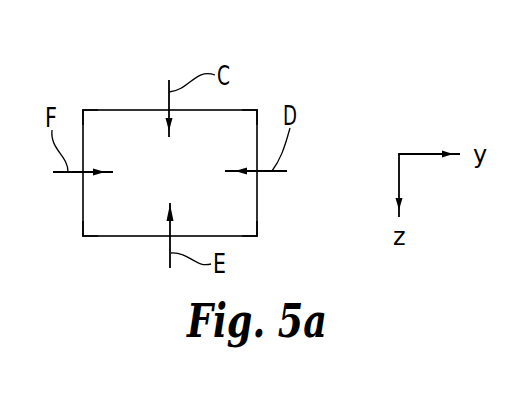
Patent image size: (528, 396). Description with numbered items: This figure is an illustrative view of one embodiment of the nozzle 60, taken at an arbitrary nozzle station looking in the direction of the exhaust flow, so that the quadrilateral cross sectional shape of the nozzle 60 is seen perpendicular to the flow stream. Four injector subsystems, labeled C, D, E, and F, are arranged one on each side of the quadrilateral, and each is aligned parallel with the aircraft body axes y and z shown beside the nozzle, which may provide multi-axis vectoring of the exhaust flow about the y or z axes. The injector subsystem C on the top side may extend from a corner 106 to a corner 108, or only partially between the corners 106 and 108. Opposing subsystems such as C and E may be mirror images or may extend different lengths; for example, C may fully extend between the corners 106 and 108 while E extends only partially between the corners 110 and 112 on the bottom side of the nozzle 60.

The nozzle 60 is at (118, 110).
The corner 106 is at (83, 110).
The corner 108 is at (257, 110).
The corner 110 is at (83, 237).
The corner 112 is at (257, 236).